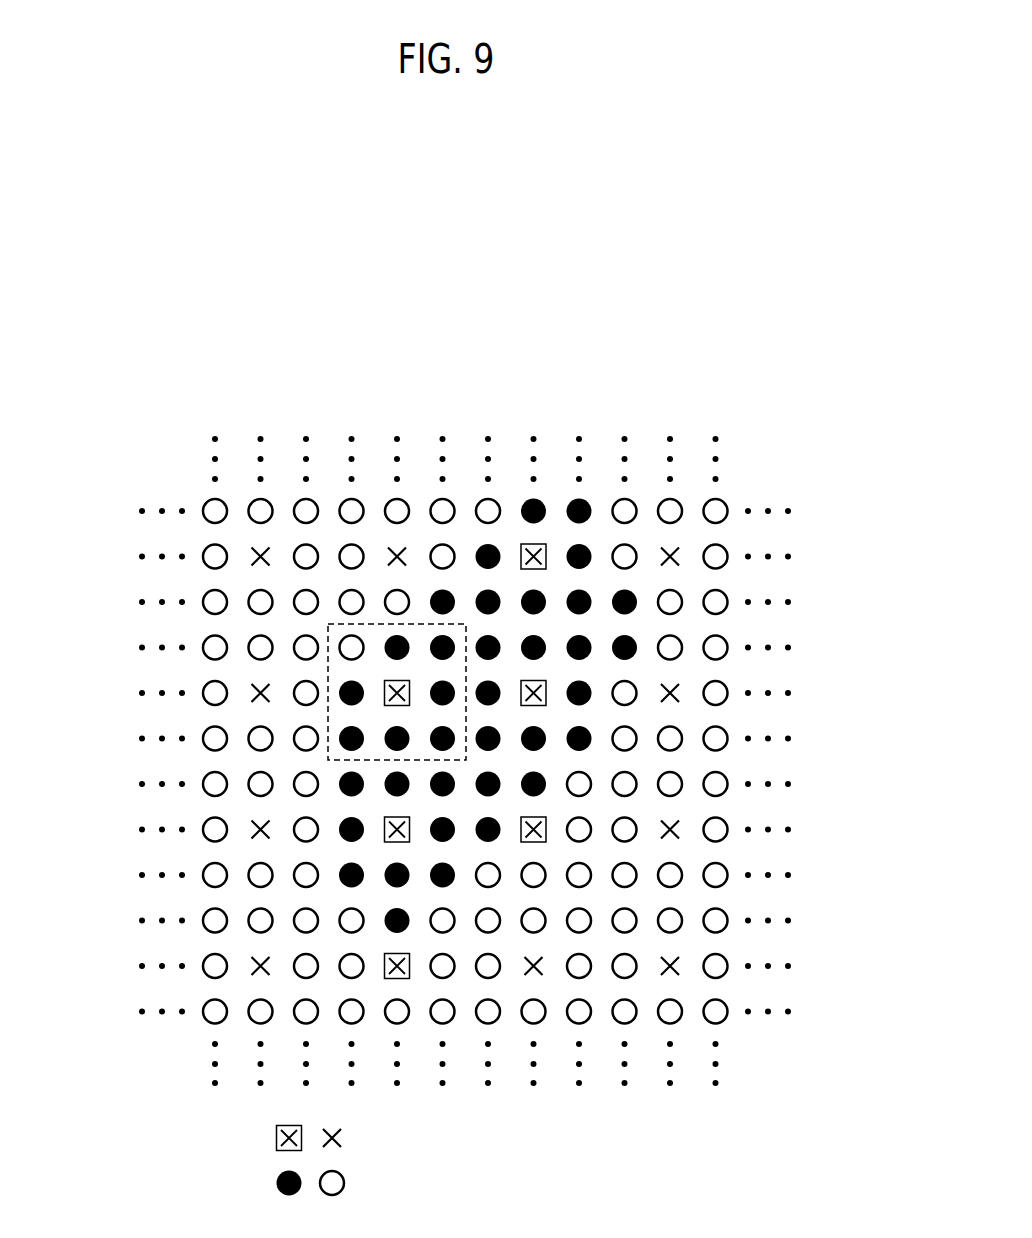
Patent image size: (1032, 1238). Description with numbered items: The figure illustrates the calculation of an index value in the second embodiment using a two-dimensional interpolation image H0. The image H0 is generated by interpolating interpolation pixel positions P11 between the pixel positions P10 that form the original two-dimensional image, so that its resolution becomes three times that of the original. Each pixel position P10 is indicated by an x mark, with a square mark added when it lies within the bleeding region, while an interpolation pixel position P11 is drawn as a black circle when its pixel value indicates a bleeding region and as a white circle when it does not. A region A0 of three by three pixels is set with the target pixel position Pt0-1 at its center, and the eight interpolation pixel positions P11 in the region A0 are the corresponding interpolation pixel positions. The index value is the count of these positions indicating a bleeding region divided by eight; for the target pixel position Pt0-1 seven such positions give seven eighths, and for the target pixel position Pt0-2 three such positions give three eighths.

The region A0 is at (373, 624).
The target pixel position Pt0-1 is at (384, 688).
The target pixel position Pt0-2 is at (547, 819).
The two-dimensional interpolation image H0 is at (844, 655).
The pixel position P10 is at (345, 1141).
The interpolation pixel position P11 is at (345, 1186).